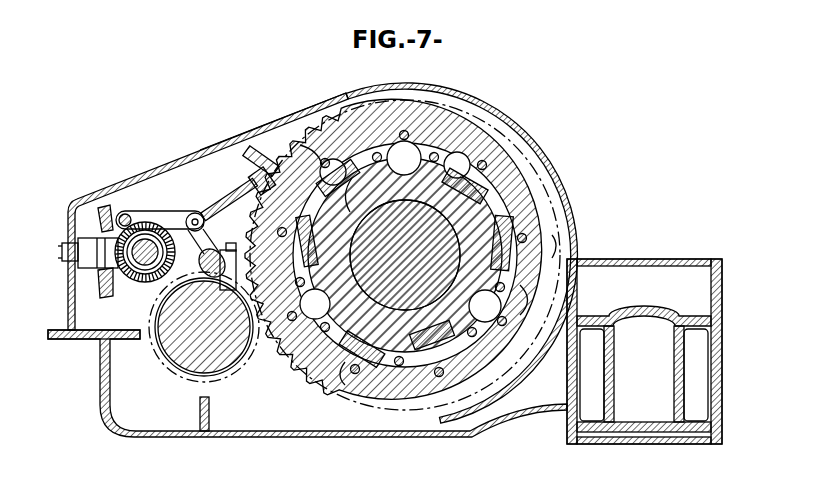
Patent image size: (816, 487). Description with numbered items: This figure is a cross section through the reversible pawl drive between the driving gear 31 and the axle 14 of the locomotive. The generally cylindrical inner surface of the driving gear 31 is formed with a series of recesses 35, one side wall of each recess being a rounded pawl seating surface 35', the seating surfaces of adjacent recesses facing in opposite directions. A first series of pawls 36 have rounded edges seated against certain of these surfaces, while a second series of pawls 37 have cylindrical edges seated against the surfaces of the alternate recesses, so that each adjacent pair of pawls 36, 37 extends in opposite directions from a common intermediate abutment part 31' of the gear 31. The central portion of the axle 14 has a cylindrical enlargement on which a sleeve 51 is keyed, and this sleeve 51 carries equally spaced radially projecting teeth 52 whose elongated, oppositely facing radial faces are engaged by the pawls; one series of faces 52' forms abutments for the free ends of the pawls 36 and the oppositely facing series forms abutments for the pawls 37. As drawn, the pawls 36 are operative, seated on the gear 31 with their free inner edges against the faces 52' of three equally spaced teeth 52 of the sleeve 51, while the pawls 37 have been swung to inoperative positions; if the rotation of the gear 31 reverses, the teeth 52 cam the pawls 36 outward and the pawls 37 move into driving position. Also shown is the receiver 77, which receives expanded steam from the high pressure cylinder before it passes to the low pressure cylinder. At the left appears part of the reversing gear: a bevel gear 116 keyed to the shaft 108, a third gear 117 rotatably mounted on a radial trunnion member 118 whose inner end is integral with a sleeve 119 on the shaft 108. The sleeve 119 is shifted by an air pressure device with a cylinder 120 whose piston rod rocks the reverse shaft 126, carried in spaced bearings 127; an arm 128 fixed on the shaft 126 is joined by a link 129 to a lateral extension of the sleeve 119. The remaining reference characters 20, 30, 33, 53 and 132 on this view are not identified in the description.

The axle 14 is at (512, 374).
The casing 20 is at (485, 432).
The pinion 30 is at (242, 376).
The driving gear 31 is at (402, 282).
The intermediate abutment parts 31' is at (434, 206).
The pawl 33 is at (402, 140).
The recesses 35 is at (493, 151).
The pawl seating surface 35' is at (494, 322).
The pawls 36 is at (208, 250).
The pawls 37 is at (352, 178).
The sleeve 51 is at (485, 306).
The teeth 52 is at (404, 238).
The tooth faces 52' is at (569, 297).
The recess 53 is at (315, 304).
The receiver 77 is at (644, 351).
The shaft 108 is at (140, 262).
The bevel gear 116 is at (104, 339).
The third gear 117 is at (100, 284).
The trunnion member 118 is at (66, 250).
The sleeve 119 is at (146, 228).
The cylinder 120 is at (248, 134).
The reverse shaft 126 is at (167, 352).
The bearings 127 is at (205, 282).
The arm 128 is at (211, 213).
The link 129 is at (188, 214).
The casing wall 132 is at (186, 170).